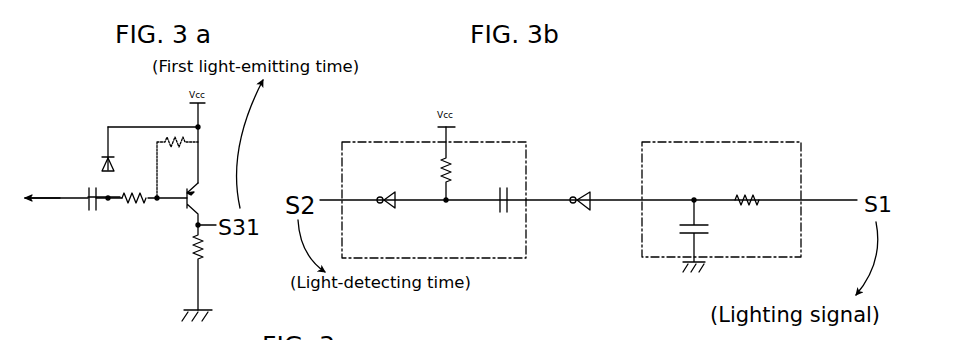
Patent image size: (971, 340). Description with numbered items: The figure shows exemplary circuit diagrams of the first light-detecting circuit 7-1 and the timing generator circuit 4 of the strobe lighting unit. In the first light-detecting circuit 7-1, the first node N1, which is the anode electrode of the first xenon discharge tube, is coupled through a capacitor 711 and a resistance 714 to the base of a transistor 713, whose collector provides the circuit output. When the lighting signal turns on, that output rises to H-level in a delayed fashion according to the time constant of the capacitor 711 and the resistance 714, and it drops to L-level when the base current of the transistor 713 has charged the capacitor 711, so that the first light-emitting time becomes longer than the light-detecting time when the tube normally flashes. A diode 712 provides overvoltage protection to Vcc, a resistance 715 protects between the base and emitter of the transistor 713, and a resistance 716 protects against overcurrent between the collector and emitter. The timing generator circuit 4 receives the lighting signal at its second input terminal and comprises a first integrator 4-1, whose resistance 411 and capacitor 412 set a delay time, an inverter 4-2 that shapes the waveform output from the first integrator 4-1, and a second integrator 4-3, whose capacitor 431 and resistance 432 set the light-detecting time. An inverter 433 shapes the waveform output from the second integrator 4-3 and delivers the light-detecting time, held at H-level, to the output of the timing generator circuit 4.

In FIG. 3A, the capacitor 711 is at (97, 213).
In FIG. 3A, the diode 712 is at (112, 160).
In FIG. 3A, the transistor 713 is at (186, 200).
In FIG. 3A, the resistance 714 is at (130, 203).
In FIG. 3A, the resistance 715 is at (170, 144).
In FIG. 3A, the resistance 716 is at (194, 259).
In FIG. 3A, the first node N1 is at (30, 202).
In FIG. 3A, the first light-detecting circuit 7-1 is at (112, 282).
In FIG. 3B, the timing generator circuit 4 is at (662, 121).
In FIG. 3B, the first integrator 4-1 is at (755, 143).
In FIG. 3B, the inverter 4-2 is at (585, 193).
In FIG. 3B, the second integrator 4-3 is at (480, 143).
In FIG. 3B, the resistance 411 is at (748, 198).
In FIG. 3B, the capacitor 412 is at (708, 233).
In FIG. 3B, the capacitor 431 is at (497, 206).
In FIG. 3B, the resistance 432 is at (440, 175).
In FIG. 3B, the inverter 433 is at (383, 209).